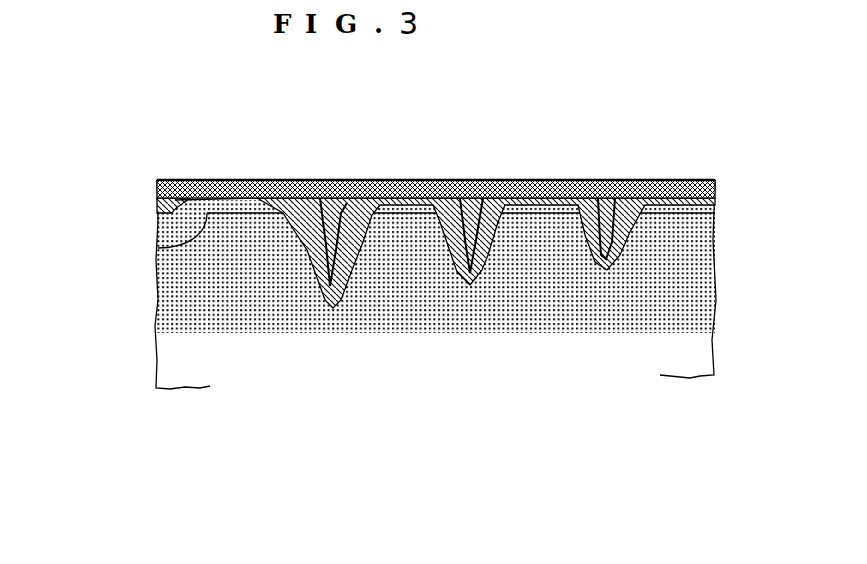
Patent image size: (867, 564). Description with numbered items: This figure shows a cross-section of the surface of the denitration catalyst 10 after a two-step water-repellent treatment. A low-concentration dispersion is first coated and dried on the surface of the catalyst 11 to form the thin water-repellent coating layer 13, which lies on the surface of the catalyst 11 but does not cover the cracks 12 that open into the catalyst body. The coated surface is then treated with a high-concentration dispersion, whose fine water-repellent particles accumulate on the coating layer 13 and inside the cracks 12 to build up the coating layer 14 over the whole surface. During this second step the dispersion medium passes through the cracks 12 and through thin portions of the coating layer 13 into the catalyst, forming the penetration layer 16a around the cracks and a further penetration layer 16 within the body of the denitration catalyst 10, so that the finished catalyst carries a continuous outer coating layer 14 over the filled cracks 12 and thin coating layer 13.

The denitration catalyst 10 is at (178, 367).
The surface of the catalyst 11 is at (158, 248).
The crack 12 is at (605, 228).
The coating layer 13 is at (400, 205).
The coating layer 14 is at (522, 186).
The penetration layer 16 is at (686, 243).
The penetration layer 16a is at (623, 222).